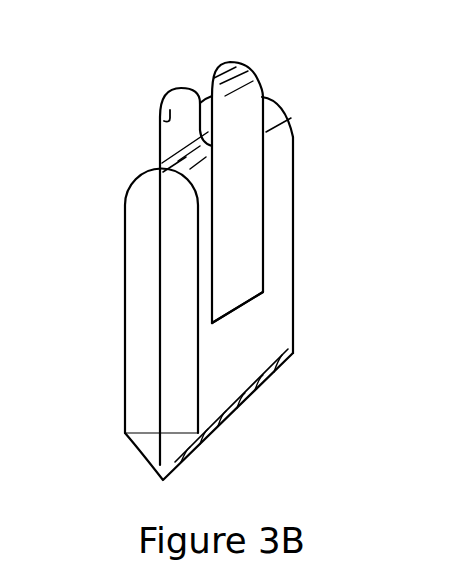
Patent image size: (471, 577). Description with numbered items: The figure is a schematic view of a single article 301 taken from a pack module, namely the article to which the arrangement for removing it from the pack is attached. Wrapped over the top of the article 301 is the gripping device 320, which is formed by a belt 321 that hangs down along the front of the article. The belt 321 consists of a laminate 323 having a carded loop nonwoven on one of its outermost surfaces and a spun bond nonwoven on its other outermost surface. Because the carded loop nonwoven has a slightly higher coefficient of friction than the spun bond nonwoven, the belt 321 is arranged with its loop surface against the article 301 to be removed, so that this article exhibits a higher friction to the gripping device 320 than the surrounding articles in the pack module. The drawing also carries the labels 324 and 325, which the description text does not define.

The article 301 is at (250, 318).
The gripping device 320 is at (256, 62).
The belt 321 is at (229, 131).
The laminate 323 is at (240, 178).
The hook 324 is at (158, 117).
The strap end 325 is at (243, 237).